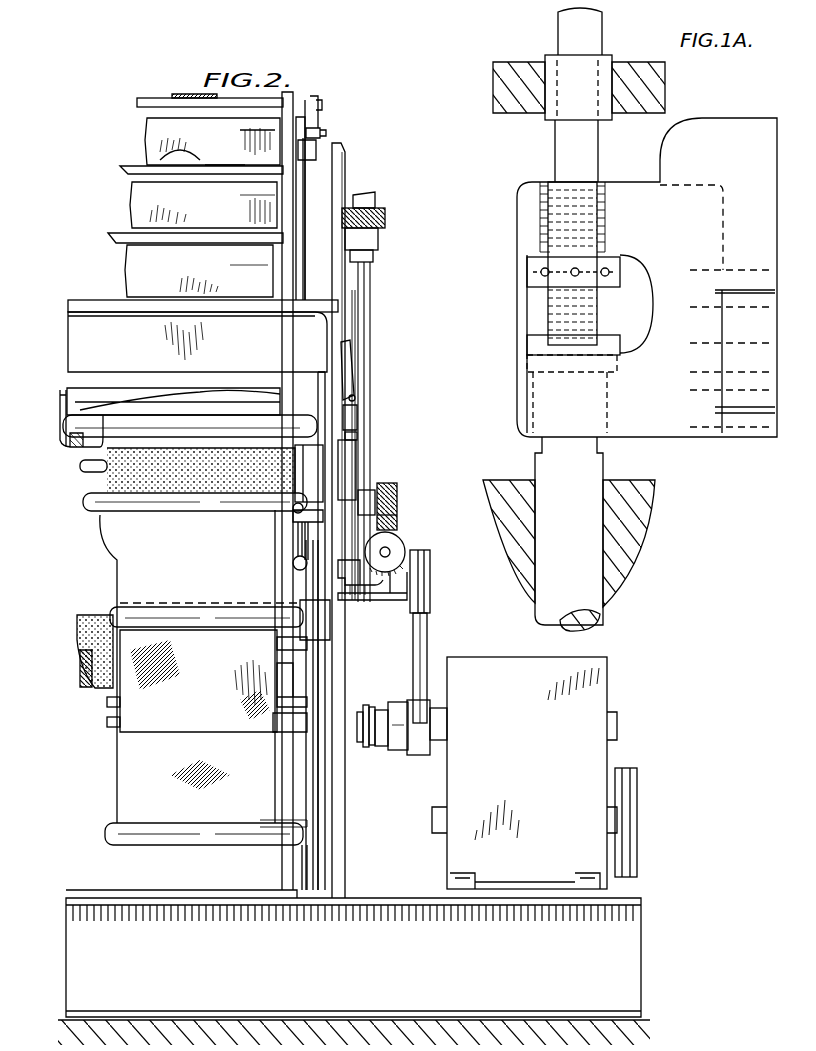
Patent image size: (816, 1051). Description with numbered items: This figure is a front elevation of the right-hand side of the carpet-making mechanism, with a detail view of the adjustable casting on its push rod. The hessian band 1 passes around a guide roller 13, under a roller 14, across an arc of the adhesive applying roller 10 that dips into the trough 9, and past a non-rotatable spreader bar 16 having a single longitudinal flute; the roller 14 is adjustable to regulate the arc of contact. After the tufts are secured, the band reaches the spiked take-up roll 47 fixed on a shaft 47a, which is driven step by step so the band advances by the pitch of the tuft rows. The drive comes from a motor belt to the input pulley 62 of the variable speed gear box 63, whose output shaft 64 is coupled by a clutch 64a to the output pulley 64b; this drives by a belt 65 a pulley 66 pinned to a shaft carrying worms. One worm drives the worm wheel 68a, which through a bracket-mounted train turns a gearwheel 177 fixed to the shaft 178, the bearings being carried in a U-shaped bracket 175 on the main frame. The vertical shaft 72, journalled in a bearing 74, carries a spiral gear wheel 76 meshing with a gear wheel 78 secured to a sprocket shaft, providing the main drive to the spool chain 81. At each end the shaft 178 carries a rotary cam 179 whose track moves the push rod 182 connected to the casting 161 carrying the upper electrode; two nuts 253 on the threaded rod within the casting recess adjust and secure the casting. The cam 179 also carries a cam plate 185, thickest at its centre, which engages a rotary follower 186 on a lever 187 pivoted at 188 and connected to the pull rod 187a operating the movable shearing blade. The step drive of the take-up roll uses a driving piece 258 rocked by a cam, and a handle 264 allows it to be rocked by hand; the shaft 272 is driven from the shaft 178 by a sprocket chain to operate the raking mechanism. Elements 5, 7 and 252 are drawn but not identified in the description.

In FIG. 2, the hessian band 1 is at (120, 780).
In FIG. 2, the frame / base plate 5 is at (632, 968).
In FIG. 2, the lower guide member 7 is at (110, 722).
In FIG. 2, the trough 9 is at (117, 687).
In FIG. 2, the roller 10 is at (82, 670).
In FIG. 2, the guide roller 13 is at (110, 630).
In FIG. 2, the roller 14 is at (110, 610).
In FIG. 2, the spreader bar 16 is at (117, 603).
In FIG. 2, the take-up roll 47 is at (83, 485).
In FIG. 2, the shaft 47a is at (82, 468).
In FIG. 2, the input pulley 62 is at (635, 808).
In FIG. 2, the variable speed gear box 63 is at (600, 687).
In FIG. 2, the output shaft 64 is at (353, 730).
In FIG. 2, the clutch 64a is at (373, 707).
In FIG. 2, the output pulley 64b is at (420, 755).
In FIG. 2, the belt 65 is at (427, 632).
In FIG. 2, the pulley 66 is at (430, 573).
In FIG. 2, the worm wheel 68a is at (403, 539).
In FIG. 2, the vertical shaft 72 is at (365, 333).
In FIG. 2, the bearing 74 is at (380, 242).
In FIG. 2, the spiral gear wheel 76 is at (383, 218).
In FIG. 2, the gear wheel 78 is at (372, 197).
In FIG. 2, the spool chain 81 is at (314, 142).
In FIG. 1A, the casting 161 is at (523, 402).
In FIG. 2, the U-shaped bracket 175 is at (375, 593).
In FIG. 2, the gearwheel 177 is at (397, 520).
In FIG. 2, the shaft 178 is at (397, 493).
In FIG. 2, the rotary cam 179 is at (352, 457).
In FIG. 2, the push rod 182 is at (338, 302).
In FIG. 1A, the push rod 182 is at (540, 313).
In FIG. 2, the cam plate 185 is at (397, 483).
In FIG. 2, the rotary follower 186 is at (358, 436).
In FIG. 2, the lever 187 is at (358, 423).
In FIG. 2, the pull rod 187a is at (353, 355).
In FIG. 2, the pivot 188 is at (355, 397).
In FIG. 1A, the collar 252 is at (577, 82).
In FIG. 1A, the nuts 253 is at (530, 283).
In FIG. 2, the driving piece 258 is at (300, 490).
In FIG. 2, the handle 264 is at (295, 566).
In FIG. 2, the shaft 272 is at (240, 427).